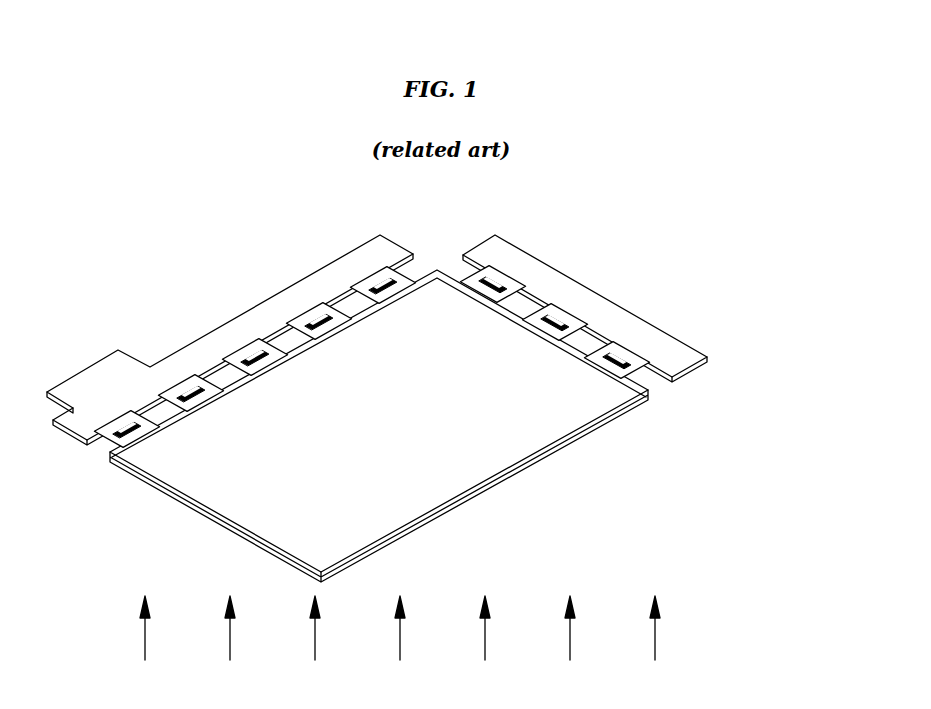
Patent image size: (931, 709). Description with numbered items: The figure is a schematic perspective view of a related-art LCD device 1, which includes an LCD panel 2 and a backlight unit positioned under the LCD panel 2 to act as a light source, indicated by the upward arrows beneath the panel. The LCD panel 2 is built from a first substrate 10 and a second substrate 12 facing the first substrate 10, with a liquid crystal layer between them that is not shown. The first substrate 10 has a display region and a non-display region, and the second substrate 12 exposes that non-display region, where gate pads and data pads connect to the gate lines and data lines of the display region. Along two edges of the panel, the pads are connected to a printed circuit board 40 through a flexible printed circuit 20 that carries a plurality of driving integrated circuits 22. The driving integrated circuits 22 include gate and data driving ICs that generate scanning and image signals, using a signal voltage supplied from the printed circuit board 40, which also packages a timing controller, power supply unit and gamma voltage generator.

The LCD device 1 is at (802, 223).
The LCD panel 2 is at (437, 426).
The first substrate 10 is at (570, 443).
The second substrate 12 is at (610, 409).
The flexible printed circuit 20 is at (107, 453).
The driving integrated circuit 22 is at (128, 427).
The printed circuit board 40 is at (212, 345).